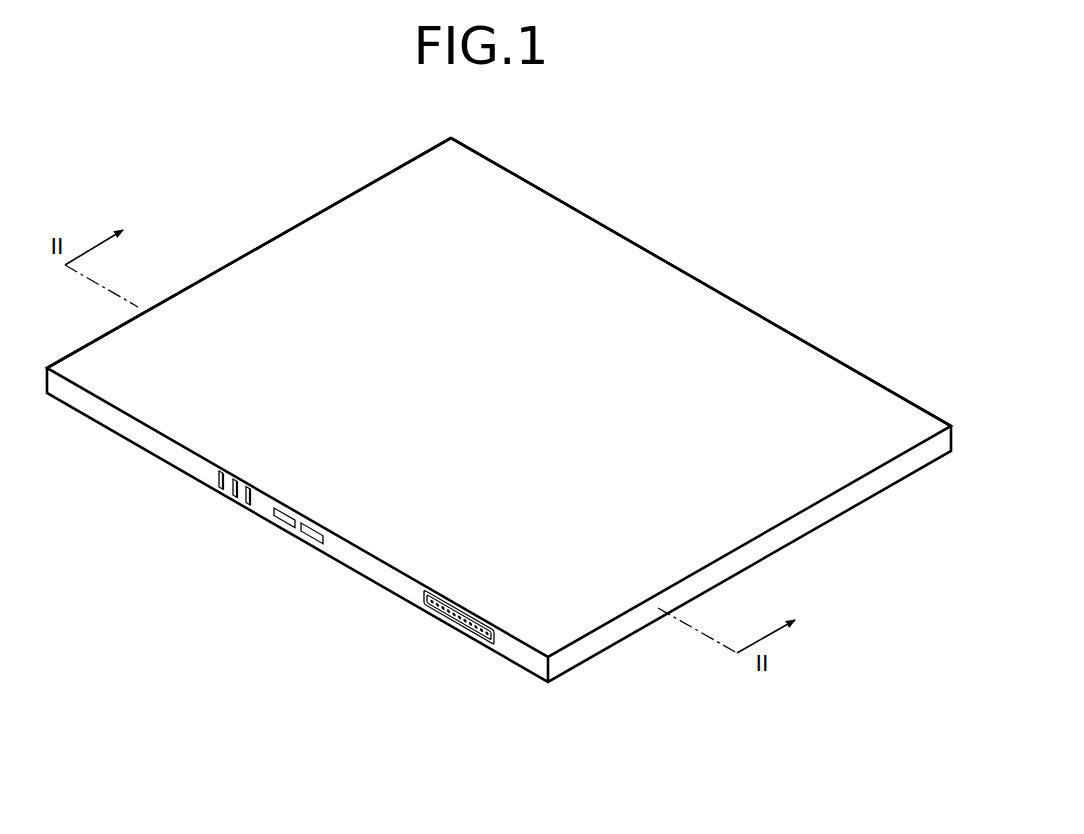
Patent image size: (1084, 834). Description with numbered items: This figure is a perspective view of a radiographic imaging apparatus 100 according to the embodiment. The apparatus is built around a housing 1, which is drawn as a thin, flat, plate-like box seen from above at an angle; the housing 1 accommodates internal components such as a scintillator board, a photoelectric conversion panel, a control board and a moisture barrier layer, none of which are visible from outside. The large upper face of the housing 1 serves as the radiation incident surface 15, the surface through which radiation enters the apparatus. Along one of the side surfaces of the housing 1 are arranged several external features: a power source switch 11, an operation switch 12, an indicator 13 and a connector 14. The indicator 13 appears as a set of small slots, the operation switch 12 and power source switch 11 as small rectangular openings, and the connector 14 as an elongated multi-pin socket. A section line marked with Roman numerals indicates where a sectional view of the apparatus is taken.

The radiographic imaging apparatus 100 is at (368, 178).
The housing 1 is at (587, 226).
The radiation incident surface 15 is at (289, 251).
The indicator 13 is at (247, 496).
The operation switch 12 is at (279, 517).
The power source switch 11 is at (317, 536).
The connector 14 is at (432, 609).